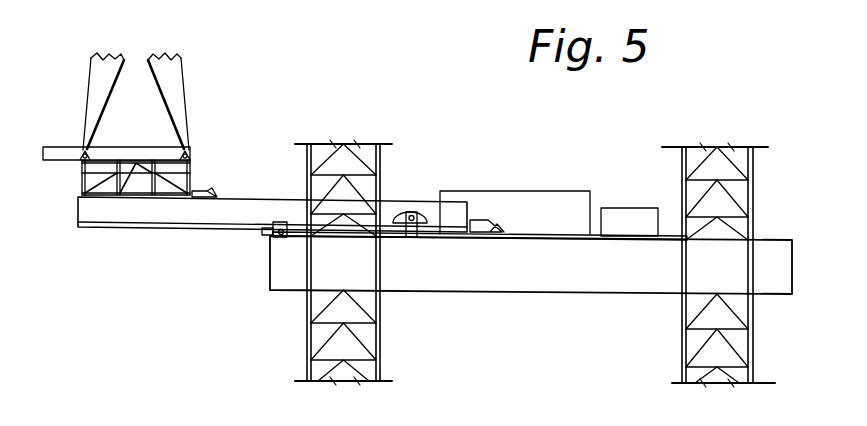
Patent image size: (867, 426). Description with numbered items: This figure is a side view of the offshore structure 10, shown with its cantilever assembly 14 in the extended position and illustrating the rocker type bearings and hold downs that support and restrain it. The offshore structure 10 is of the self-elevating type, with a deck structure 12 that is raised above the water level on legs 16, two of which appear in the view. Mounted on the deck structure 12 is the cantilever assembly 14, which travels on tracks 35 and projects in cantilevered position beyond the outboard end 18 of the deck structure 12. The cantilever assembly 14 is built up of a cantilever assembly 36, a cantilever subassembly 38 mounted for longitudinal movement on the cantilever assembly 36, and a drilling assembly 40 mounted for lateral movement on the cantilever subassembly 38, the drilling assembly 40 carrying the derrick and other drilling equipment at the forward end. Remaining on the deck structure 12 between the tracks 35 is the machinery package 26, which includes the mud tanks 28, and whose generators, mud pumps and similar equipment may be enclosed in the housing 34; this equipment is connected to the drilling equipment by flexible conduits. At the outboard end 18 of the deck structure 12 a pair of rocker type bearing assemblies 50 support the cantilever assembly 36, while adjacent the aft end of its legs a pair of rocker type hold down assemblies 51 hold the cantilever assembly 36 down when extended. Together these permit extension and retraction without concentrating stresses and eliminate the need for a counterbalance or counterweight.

The offshore structure 10 is at (489, 286).
The deck structure 12 is at (489, 265).
The cantilever assembly 14 is at (249, 161).
The legs 16 is at (380, 338).
The outboard end 18 is at (270, 263).
The machinery package 26 is at (625, 191).
The mud tanks 28 is at (632, 208).
The housing 34 is at (513, 193).
The tracks 35 is at (527, 238).
The cantilever assembly 36 is at (148, 212).
The cantilever subassembly 38 is at (192, 163).
The drilling assembly 40 is at (52, 147).
The rocker type bearing assemblies 50 is at (264, 238).
The rocker type hold down assemblies 51 is at (412, 241).